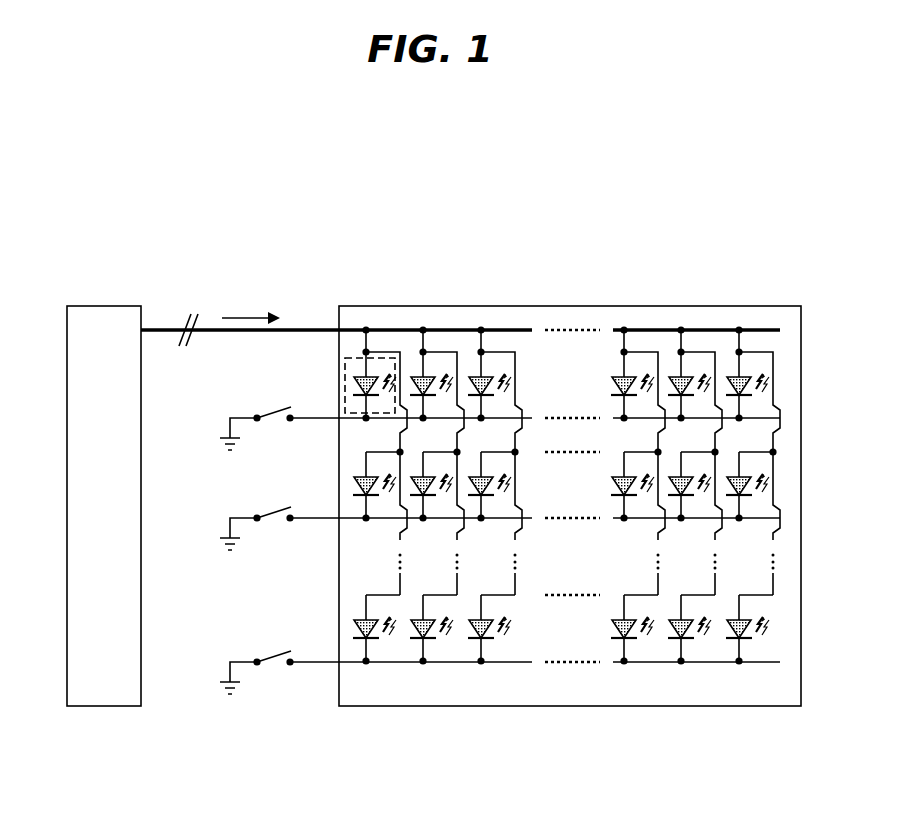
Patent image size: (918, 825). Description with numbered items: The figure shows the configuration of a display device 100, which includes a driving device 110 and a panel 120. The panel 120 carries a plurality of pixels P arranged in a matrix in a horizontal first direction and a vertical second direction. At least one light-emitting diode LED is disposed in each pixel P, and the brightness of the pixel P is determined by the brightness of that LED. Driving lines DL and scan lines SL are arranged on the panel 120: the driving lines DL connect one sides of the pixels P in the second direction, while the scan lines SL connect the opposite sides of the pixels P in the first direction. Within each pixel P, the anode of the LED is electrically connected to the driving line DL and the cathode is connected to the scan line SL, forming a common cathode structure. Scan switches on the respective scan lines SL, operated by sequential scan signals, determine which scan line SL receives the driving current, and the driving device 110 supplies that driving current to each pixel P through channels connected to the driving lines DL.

The display device 100 is at (434, 416).
The driving device 110 is at (131, 305).
The panel 120 is at (785, 305).
The pixel P is at (330, 328).
The driving line DL is at (385, 357).
The scan line SL is at (527, 414).
The light-emitting diode LED is at (345, 378).